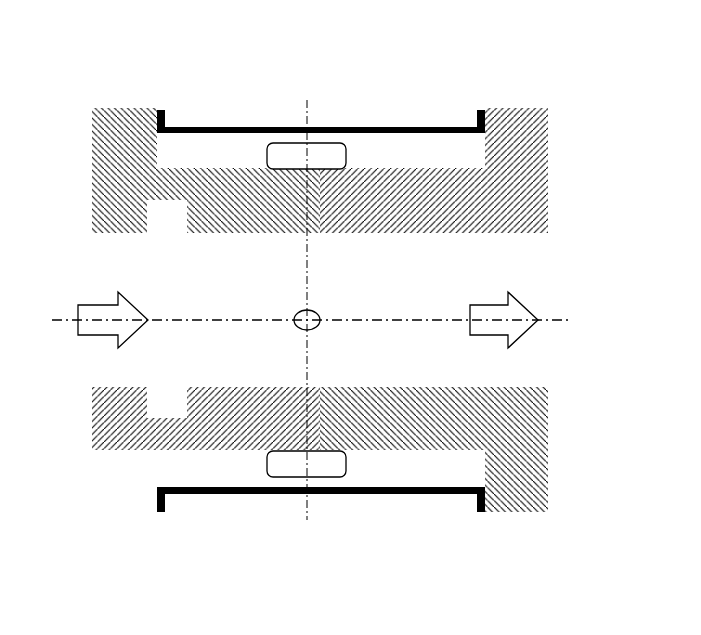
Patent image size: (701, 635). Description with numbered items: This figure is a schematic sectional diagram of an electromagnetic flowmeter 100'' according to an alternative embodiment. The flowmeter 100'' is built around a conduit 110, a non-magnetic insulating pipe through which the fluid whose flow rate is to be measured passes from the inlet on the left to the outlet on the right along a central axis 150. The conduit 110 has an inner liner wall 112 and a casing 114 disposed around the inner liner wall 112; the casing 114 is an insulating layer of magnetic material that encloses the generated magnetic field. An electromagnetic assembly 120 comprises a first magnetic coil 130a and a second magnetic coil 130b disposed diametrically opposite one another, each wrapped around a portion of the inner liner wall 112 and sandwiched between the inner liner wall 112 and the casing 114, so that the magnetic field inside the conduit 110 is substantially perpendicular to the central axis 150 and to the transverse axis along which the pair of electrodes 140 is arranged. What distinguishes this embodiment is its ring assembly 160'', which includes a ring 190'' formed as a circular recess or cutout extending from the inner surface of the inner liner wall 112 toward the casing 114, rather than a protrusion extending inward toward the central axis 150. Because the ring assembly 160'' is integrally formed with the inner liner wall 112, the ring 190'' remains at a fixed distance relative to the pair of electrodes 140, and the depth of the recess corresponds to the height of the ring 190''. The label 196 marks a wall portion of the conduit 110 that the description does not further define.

The EM flowmeter 100'' is at (322, 310).
The conduit 110 is at (519, 99).
The inner liner wall 112 is at (522, 173).
The casing 114 is at (383, 127).
The electromagnetic assembly 120 is at (289, 147).
The first magnetic coil 130a is at (267, 162).
The second magnetic coil 130b is at (267, 458).
The pair of electrodes 140 is at (322, 320).
The central axis 150 is at (72, 312).
The ring assembly 160'' is at (197, 238).
The ring 190'' is at (197, 385).
The inlet wall portion 196 is at (90, 157).